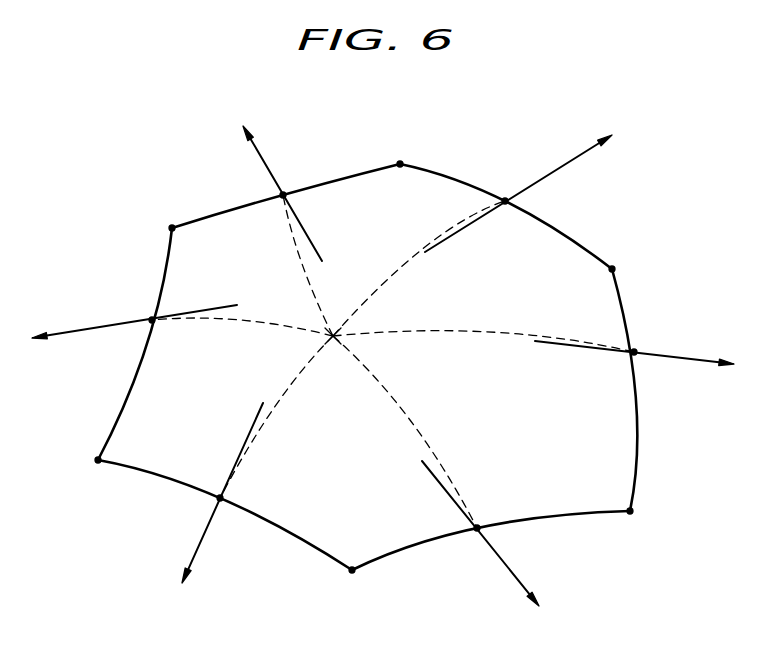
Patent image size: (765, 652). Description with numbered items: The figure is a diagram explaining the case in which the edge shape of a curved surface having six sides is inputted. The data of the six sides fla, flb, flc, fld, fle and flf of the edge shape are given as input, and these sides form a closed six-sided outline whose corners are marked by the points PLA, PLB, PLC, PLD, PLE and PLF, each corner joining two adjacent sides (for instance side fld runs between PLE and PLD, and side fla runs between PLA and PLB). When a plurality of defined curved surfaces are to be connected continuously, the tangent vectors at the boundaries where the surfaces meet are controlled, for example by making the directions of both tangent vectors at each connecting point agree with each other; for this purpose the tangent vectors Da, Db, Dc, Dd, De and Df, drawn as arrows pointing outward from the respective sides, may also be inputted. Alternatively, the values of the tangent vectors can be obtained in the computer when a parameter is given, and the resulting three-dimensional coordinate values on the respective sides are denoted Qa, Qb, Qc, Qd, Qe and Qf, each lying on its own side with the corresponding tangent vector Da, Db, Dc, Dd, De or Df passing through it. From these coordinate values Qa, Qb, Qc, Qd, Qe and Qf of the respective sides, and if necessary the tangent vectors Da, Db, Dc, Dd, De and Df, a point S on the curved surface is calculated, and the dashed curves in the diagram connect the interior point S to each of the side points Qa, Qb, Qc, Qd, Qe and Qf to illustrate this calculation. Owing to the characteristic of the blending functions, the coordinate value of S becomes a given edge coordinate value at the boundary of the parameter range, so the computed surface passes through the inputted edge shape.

The vertex point A of the polygonal contour PLA is at (352, 573).
The vertex point B of the polygonal contour PLB is at (633, 511).
The vertex point C of the polygonal contour PLC is at (615, 269).
The vertex point D of the polygonal contour PLD is at (400, 164).
The vertex point E of the polygonal contour PLE is at (172, 228).
The vertex point F of the polygonal contour PLF is at (98, 463).
The side of the edge shape fla is at (592, 514).
The side of the edge shape flb is at (637, 459).
The side of the edge shape flc is at (579, 243).
The side of the edge shape fld is at (342, 178).
The side of the edge shape fle is at (166, 258).
The side of the edge shape flf is at (277, 529).
The three-dimensional coordinate value of a side Qa is at (472, 535).
The three-dimensional coordinate value of a side Qb is at (637, 350).
The three-dimensional coordinate value of a side Qc is at (505, 199).
The three-dimensional coordinate value of a side Qd is at (286, 193).
The intersection point on flank e Qe is at (147, 324).
The three-dimensional coordinate value of a side Qf is at (216, 501).
The tangent vector Da is at (512, 572).
The tangent vector Db is at (684, 360).
The tangent vector Dc is at (574, 159).
The tangent vector Dd is at (258, 148).
The tangent vector De is at (88, 328).
The tangent vector Df is at (193, 559).
The point on the curved surface S is at (333, 373).